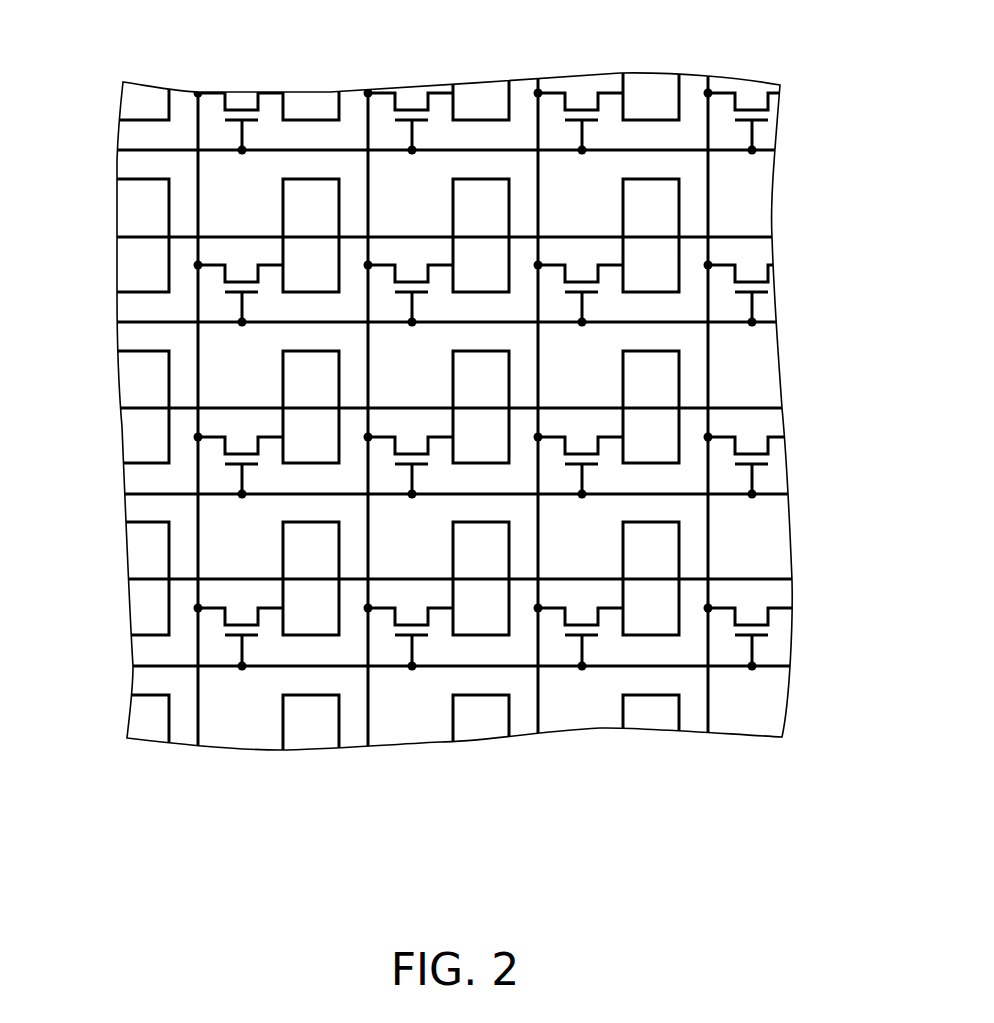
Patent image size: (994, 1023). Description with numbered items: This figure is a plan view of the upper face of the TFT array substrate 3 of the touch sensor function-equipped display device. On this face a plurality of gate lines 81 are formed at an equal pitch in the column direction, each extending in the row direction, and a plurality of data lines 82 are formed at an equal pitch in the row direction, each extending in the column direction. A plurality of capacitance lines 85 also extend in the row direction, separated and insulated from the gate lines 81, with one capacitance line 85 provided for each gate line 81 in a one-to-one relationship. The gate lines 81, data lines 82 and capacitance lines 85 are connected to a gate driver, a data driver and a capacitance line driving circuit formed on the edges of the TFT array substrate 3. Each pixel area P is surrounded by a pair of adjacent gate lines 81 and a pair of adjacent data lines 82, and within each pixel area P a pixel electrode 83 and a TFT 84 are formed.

The TFT array substrate 3 is at (754, 68).
The gate line 81 is at (150, 150).
The data line 82 is at (197, 106).
The pixel electrode 83 is at (485, 195).
The TFT 84 is at (405, 247).
The capacitance line 85 is at (756, 237).
The pixel area P is at (693, 397).